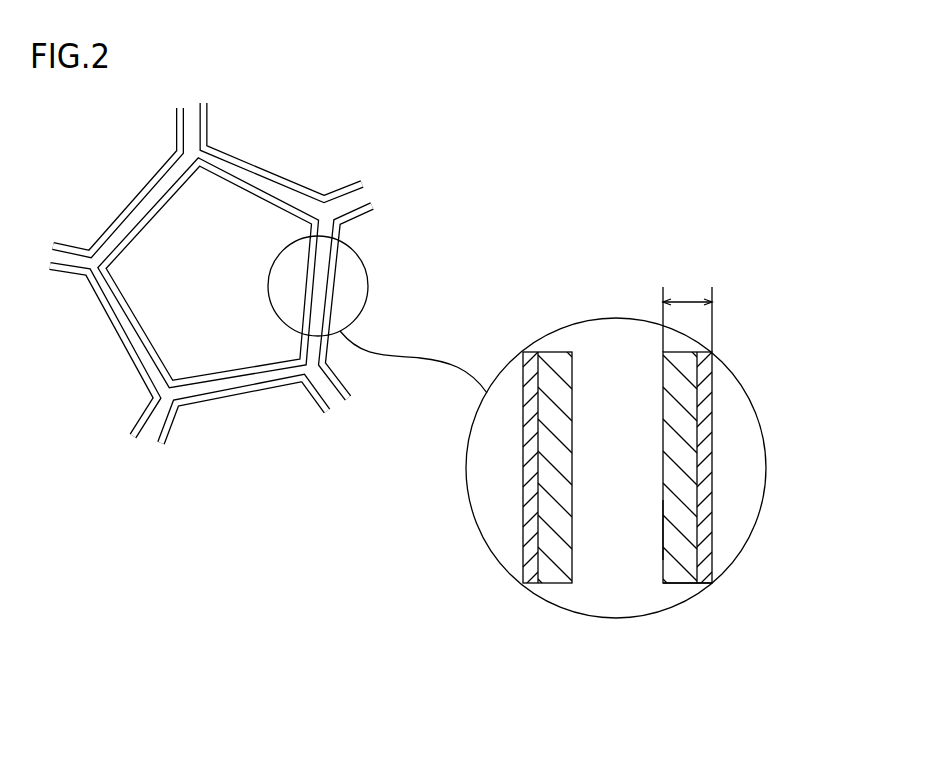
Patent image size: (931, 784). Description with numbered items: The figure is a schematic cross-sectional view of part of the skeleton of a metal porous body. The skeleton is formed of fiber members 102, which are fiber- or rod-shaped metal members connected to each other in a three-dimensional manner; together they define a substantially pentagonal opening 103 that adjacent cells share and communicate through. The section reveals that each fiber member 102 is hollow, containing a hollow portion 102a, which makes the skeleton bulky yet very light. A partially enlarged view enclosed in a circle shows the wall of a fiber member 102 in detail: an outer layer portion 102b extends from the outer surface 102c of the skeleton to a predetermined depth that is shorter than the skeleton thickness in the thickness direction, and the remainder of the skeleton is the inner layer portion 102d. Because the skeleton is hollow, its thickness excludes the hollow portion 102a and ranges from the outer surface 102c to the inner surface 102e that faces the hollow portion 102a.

The opening 103 is at (225, 258).
The fiber member 102 is at (337, 260).
The hollow portion 102a is at (313, 308).
The outer layer portion 102b is at (712, 464).
The outer surface 102c is at (712, 423).
The inner layer portion 102d is at (680, 547).
The inner surface 102e is at (663, 527).